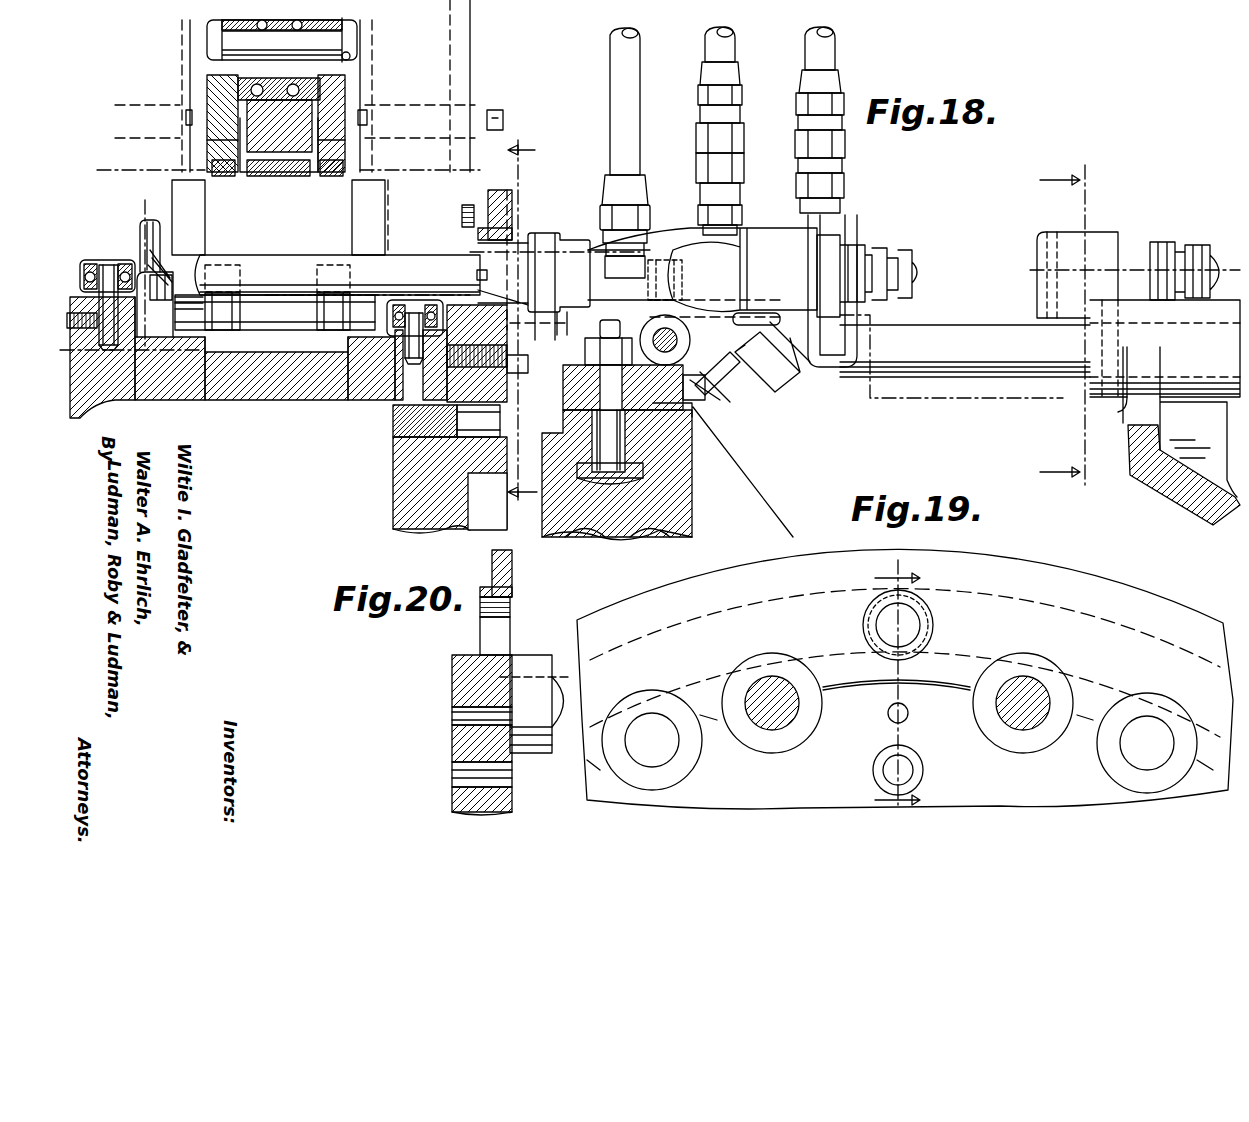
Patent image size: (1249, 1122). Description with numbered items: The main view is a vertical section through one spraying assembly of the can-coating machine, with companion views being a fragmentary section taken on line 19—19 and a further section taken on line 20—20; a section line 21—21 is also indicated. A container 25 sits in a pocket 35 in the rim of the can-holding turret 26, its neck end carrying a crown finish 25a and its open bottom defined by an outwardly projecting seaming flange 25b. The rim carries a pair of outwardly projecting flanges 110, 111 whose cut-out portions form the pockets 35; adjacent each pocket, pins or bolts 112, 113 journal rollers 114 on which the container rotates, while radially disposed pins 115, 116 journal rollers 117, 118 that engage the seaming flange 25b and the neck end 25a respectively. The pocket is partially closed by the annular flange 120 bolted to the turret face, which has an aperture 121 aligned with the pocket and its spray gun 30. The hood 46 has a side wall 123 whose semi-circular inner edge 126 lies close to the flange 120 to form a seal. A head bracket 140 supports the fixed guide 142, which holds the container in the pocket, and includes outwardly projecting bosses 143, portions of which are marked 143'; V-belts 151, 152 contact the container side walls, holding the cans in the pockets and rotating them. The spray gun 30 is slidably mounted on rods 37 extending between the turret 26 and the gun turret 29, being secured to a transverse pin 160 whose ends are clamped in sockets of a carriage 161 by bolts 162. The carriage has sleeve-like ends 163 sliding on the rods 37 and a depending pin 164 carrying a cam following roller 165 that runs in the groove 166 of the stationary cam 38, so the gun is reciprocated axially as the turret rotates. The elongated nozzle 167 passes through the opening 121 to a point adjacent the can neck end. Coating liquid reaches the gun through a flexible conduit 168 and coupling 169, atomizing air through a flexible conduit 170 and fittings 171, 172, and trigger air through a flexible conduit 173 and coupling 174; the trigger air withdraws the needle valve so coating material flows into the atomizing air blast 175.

In FIG. 18, the section line 19— 19 is at (527, 327).
In FIG. 19, the section line 20— 20 is at (897, 685).
In FIG. 18, the section line 21- 21 is at (1069, 328).
In FIG. 18, the container body 25 is at (275, 318).
In FIG. 18, the crown finish 25a is at (138, 236).
In FIG. 18, the seaming flange 25b is at (390, 212).
In FIG. 18, the can-holding turret 26 is at (300, 383).
In FIG. 18, the spray gun supporting turret 29 is at (1175, 478).
In FIG. 18, the spray gun 30 is at (755, 245).
In FIG. 18, the pocket 35 is at (197, 230).
In FIG. 18, the rod 37 is at (925, 332).
In FIG. 19, the rod 37 is at (772, 720).
In FIG. 20, the rod 37 is at (560, 680).
In FIG. 18, the stationary cam 38 is at (690, 440).
In FIG. 18, the hood 46 is at (478, 92).
In FIG. 18, the outwardly projecting flange 110 is at (185, 340).
In FIG. 18, the outwardly projecting flange 111 is at (365, 330).
In FIG. 18, the pin or bolt 112 is at (332, 262).
In FIG. 18, the pin or bolt 113 is at (218, 263).
In FIG. 18, the roller 114 is at (220, 318).
In FIG. 18, the radially disposed pin 115 is at (415, 372).
In FIG. 18, the radially disposed pin 116 is at (110, 325).
In FIG. 18, the roller 117 is at (428, 300).
In FIG. 18, the roller 118 is at (118, 262).
In FIG. 18, the annular flange 120 is at (510, 212).
In FIG. 19, the annular flange 120 is at (1145, 608).
In FIG. 20, the annular flange 120 is at (512, 580).
In FIG. 18, the aperture 121 is at (515, 240).
In FIG. 19, the aperture 121 is at (922, 630).
In FIG. 20, the aperture 121 is at (492, 640).
In FIG. 18, the side wall 123 is at (480, 75).
In FIG. 18, the semi-circular inner edge 126 is at (462, 222).
In FIG. 18, the head bracket 140 is at (233, 172).
In FIG. 18, the fixed guide 142 is at (285, 170).
In FIG. 18, the outwardly projecting boss 143 is at (275, 123).
In FIG. 18, the clamp jaw face 143' is at (274, 126).
In FIG. 18, the V-belt 151 is at (345, 160).
In FIG. 18, the V-belt 152 is at (213, 167).
In FIG. 18, the transverse pin 160 is at (690, 340).
In FIG. 18, the carriage 161 is at (690, 400).
In FIG. 18, the bolt 162 is at (648, 285).
In FIG. 18, the sleeve-like end 163 is at (760, 392).
In FIG. 18, the depending pin 164 is at (650, 395).
In FIG. 18, the cam following roller 165 is at (625, 430).
In FIG. 18, the groove 166 is at (630, 470).
In FIG. 18, the elongated nozzle 167 is at (273, 258).
In FIG. 19, the elongated nozzle 167 is at (866, 630).
In FIG. 18, the flexible conduit 168 is at (620, 98).
In FIG. 18, the coupling 169 is at (642, 192).
In FIG. 18, the flexible conduit 170 is at (832, 45).
In FIG. 18, the fitting 171 is at (845, 172).
In FIG. 18, the fitting 172 is at (790, 345).
In FIG. 18, the flexible conduit 173 is at (730, 45).
In FIG. 18, the coupling 174 is at (735, 148).
In FIG. 18, the atomizing air blast 175 is at (160, 225).